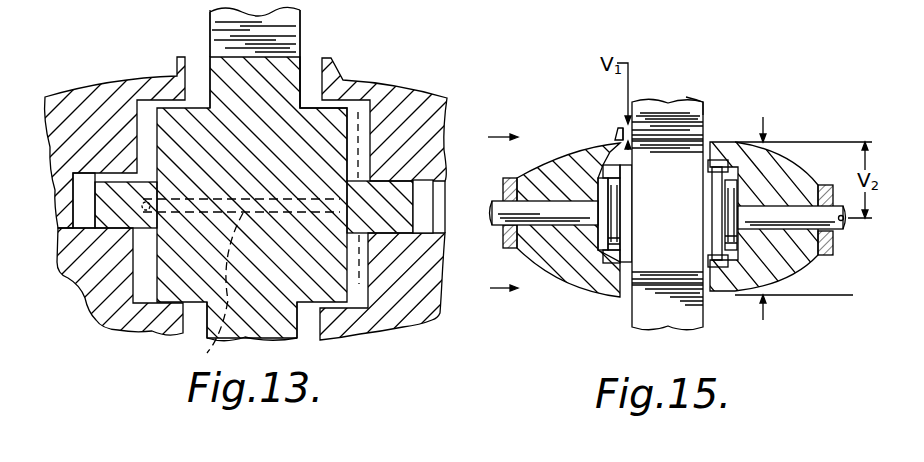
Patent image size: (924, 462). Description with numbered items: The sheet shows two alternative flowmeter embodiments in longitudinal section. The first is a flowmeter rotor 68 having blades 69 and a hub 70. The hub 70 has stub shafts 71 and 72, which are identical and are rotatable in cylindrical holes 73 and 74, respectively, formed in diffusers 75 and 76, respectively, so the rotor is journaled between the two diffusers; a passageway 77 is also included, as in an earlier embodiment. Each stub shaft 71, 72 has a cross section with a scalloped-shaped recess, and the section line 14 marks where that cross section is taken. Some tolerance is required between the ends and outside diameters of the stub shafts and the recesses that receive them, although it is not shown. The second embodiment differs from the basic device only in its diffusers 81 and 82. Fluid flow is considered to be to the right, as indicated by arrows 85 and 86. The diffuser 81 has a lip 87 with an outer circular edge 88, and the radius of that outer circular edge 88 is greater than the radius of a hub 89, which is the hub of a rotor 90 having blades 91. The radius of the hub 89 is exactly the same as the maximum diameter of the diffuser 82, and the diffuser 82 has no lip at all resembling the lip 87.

In FIG. 13, the section line 14- 14 is at (358, 136).
In FIG. 13, the flowmeter rotor 68 is at (303, 50).
In FIG. 13, the blades 69 is at (296, 33).
In FIG. 13, the hub 70 is at (300, 79).
In FIG. 13, the stub shaft 71 is at (134, 252).
In FIG. 13, the stub shaft 72 is at (369, 237).
In FIG. 13, the cylindrical hole 73 is at (80, 203).
In FIG. 13, the cylindrical hole 74 is at (428, 196).
In FIG. 13, the diffuser 75 is at (93, 85).
In FIG. 13, the diffuser 76 is at (406, 85).
In FIG. 13, the passageway 77 is at (209, 352).
In FIG. 15, the diffuser 81 is at (556, 149).
In FIG. 15, the diffuser 82 is at (799, 167).
In FIG. 15, the arrow 85 is at (493, 133).
In FIG. 15, the arrow 86 is at (498, 288).
In FIG. 15, the lip 87 is at (617, 133).
In FIG. 15, the outer circular edge 88 is at (627, 128).
In FIG. 15, the hub 89 is at (686, 216).
In FIG. 15, the rotor 90 is at (707, 105).
In FIG. 15, the blades 91 is at (694, 121).